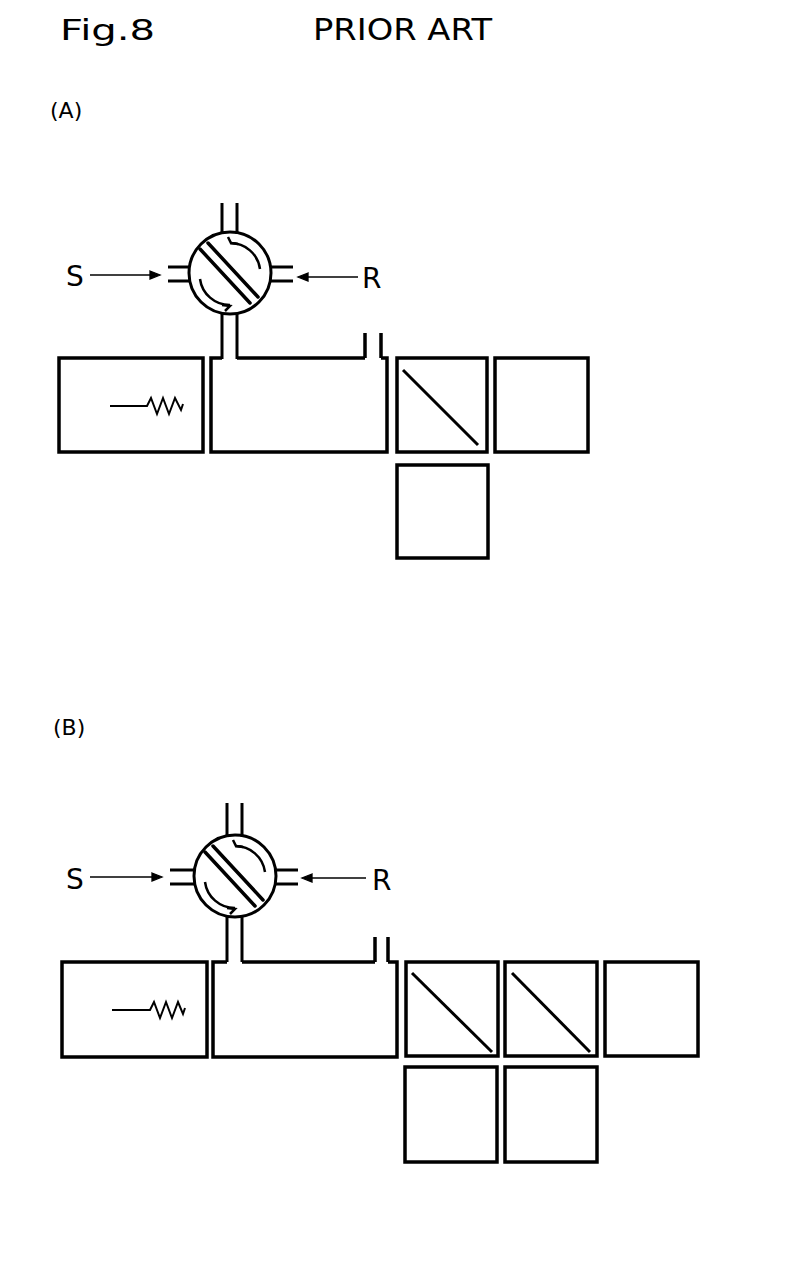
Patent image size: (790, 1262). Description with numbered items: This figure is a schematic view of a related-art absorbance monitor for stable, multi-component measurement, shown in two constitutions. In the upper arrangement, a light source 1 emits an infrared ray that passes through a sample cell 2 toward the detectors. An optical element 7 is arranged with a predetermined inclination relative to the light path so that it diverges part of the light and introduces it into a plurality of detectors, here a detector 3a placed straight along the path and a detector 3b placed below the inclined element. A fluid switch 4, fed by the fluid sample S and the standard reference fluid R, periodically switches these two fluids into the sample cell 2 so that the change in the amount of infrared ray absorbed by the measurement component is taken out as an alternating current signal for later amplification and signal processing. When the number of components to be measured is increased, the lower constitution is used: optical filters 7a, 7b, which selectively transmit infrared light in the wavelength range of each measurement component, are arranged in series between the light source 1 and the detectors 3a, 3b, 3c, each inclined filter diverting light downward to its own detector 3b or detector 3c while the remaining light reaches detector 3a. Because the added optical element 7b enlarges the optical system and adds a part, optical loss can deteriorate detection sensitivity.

The light source 1 is at (120, 453).
The sample cell 2 is at (287, 453).
The detector 3a is at (544, 357).
The detector 3b is at (432, 558).
The detector 3c is at (540, 1162).
The fluid switch 4 is at (258, 243).
The optical element 7 is at (438, 405).
The optical filter 7a is at (447, 1007).
The optical filter 7b is at (548, 1007).